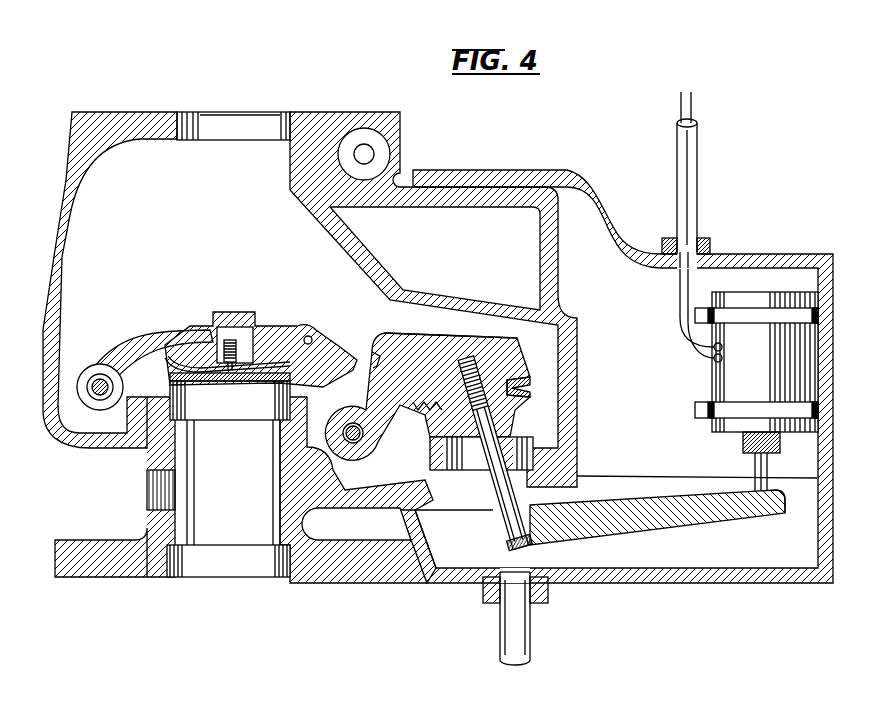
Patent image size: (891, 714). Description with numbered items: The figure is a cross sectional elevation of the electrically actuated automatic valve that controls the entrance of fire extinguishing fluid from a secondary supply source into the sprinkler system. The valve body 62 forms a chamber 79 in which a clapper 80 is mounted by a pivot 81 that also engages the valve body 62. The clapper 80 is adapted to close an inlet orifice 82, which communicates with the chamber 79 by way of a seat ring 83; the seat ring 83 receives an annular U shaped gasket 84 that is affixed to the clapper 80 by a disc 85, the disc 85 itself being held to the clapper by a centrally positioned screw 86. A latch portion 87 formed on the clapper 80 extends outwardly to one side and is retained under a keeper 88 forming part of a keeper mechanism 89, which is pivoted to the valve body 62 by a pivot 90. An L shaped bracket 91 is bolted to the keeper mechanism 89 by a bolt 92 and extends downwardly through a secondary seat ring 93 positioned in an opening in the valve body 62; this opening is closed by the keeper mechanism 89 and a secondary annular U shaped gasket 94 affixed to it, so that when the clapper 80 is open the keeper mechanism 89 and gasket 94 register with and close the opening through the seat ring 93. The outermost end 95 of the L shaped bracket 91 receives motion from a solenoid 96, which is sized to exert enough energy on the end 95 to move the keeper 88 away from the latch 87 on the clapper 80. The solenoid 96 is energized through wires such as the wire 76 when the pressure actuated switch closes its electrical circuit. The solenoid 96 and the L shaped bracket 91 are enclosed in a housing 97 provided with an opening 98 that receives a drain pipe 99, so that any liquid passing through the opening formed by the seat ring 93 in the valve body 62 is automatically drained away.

The valve body 62 is at (58, 214).
The wire 76 is at (690, 112).
The chamber 79 is at (233, 179).
The clapper 80 is at (157, 324).
The pivot 81 is at (98, 378).
The inlet orifice 82 is at (218, 553).
The seat ring 83 is at (230, 463).
The annular U shaped gasket 84 is at (262, 385).
The disc 85 is at (278, 328).
The screw 86 is at (232, 332).
The latch portion 87 is at (353, 360).
The keeper 88 is at (373, 341).
The keeper mechanism 89 is at (448, 338).
The pivot 90 is at (365, 457).
The L shaped bracket 91 is at (587, 527).
The bolt 92 is at (510, 520).
The secondary seat ring 93 is at (463, 470).
The secondary annular U shaped gasket 94 is at (523, 388).
The outermost end 95 is at (785, 506).
The solenoid 96 is at (743, 426).
The housing 97 is at (833, 568).
The opening 98 is at (533, 597).
The drain pipe 99 is at (522, 647).